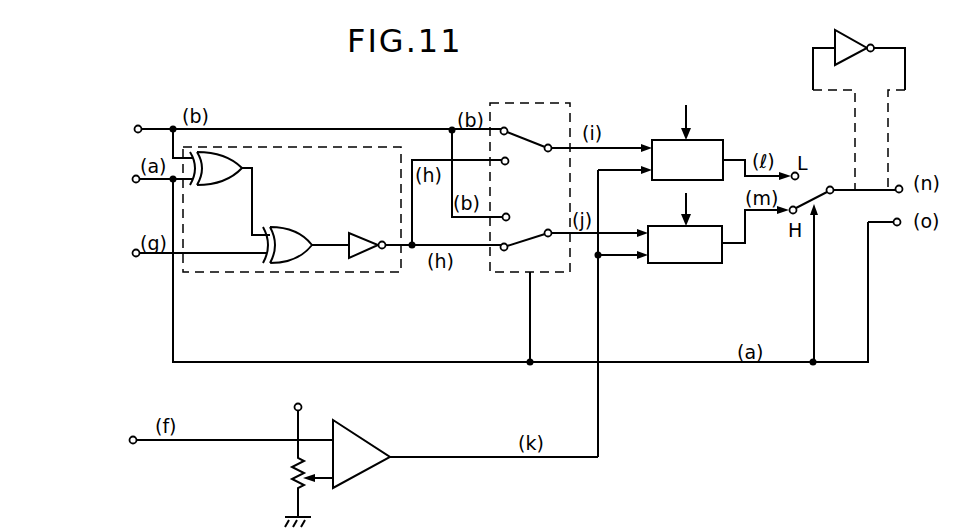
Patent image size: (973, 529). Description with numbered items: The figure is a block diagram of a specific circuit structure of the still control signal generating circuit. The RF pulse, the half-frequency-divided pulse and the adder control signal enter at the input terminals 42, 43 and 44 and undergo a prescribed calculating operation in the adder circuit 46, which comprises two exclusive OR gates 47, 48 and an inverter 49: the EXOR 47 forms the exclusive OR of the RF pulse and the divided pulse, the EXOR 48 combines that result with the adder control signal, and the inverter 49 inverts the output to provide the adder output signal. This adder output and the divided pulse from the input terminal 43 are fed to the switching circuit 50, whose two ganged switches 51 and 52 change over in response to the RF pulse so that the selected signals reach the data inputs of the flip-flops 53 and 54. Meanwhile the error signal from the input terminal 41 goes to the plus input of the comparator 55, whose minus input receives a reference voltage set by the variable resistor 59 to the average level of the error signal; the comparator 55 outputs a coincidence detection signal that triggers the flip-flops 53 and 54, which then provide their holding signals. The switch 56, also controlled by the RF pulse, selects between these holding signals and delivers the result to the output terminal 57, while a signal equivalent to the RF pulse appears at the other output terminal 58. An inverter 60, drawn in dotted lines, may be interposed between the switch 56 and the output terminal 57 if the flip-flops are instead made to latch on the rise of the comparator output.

The input terminal 41 is at (133, 436).
The input terminal 42 is at (134, 183).
The input terminal 43 is at (136, 133).
The input terminal 44 is at (134, 257).
The adder circuit 46 is at (348, 273).
The exclusive OR gate 47 is at (237, 160).
The exclusive OR gate 48 is at (300, 227).
The inverter 49 is at (372, 233).
The switching circuit 50 is at (545, 103).
The switch 51 is at (528, 140).
The switch 52 is at (538, 232).
The flip-flop 53 is at (708, 140).
The flip-flop 54 is at (703, 264).
The comparator 55 is at (370, 437).
The switch 56 is at (822, 188).
The output terminal 57 is at (902, 186).
The output terminal 58 is at (897, 226).
The variable resistor 59 is at (292, 483).
The inverter 60 is at (835, 42).